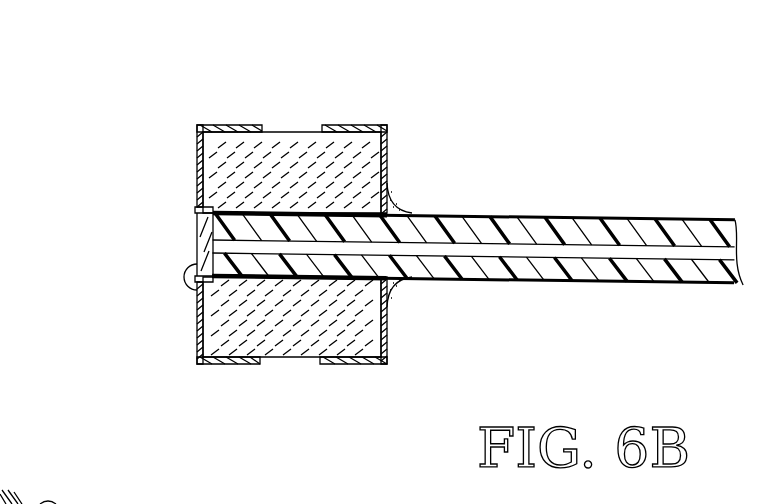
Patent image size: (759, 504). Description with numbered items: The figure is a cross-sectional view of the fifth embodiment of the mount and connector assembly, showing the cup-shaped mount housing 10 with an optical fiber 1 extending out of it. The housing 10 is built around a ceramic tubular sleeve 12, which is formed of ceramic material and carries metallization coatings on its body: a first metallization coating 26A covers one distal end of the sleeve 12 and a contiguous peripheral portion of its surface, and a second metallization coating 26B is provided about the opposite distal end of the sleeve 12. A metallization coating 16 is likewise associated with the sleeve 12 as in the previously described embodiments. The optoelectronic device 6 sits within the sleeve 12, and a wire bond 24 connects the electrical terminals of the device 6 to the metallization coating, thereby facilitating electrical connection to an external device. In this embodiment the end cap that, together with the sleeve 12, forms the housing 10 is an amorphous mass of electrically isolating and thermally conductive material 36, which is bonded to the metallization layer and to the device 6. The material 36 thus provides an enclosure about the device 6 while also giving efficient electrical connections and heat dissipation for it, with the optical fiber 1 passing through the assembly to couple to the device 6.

The cup-shaped mount housing 10 is at (136, 77).
The ceramic tubular sleeve 12 is at (290, 128).
The metallization coating 16 is at (390, 209).
The optical fiber 1 is at (606, 218).
The electrically isolating and thermally conductive material 36 is at (197, 347).
The optoelectronic device 6 is at (198, 247).
The wire bond 24 is at (184, 276).
The first metallization coating 26A is at (224, 364).
The second metallization coating 26B is at (342, 364).